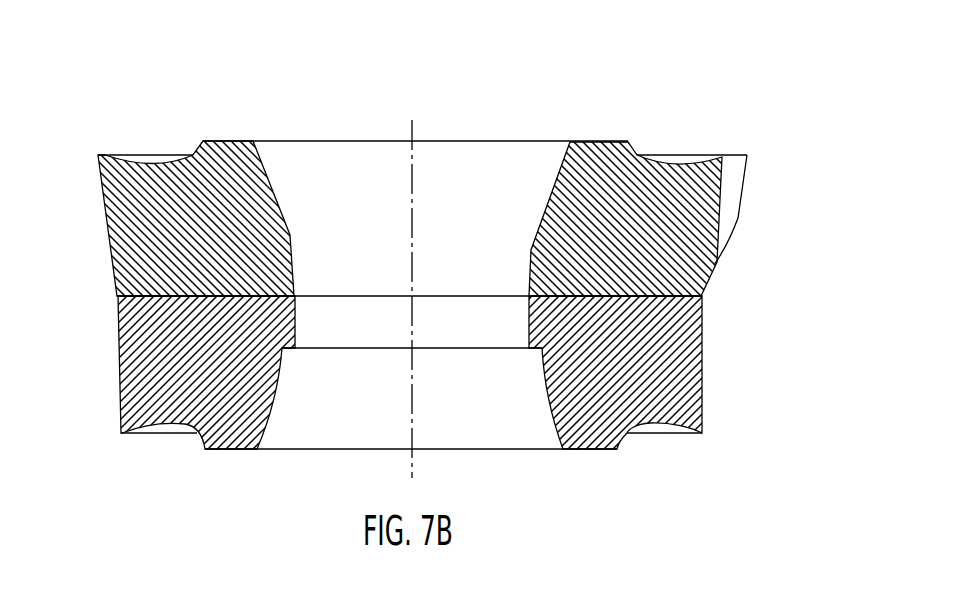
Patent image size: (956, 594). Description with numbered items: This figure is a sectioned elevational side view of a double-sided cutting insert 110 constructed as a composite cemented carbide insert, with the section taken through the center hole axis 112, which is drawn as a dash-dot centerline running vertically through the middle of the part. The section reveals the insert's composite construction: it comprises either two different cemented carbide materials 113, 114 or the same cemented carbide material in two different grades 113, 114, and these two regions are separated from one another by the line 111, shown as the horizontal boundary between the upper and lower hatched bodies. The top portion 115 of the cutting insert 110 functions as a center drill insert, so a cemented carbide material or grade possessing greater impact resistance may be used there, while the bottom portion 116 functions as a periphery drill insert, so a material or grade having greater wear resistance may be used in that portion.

The double-sided cutting insert 110 is at (660, 108).
The line 111 is at (592, 295).
The center hole axis 112 is at (408, 198).
The cemented carbide material 113 is at (200, 221).
The cemented carbide material 114 is at (222, 381).
The top portion 115 is at (756, 192).
The bottom portion 116 is at (729, 357).